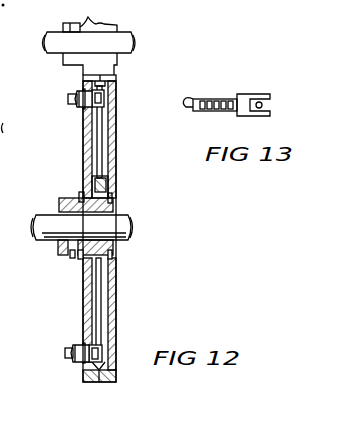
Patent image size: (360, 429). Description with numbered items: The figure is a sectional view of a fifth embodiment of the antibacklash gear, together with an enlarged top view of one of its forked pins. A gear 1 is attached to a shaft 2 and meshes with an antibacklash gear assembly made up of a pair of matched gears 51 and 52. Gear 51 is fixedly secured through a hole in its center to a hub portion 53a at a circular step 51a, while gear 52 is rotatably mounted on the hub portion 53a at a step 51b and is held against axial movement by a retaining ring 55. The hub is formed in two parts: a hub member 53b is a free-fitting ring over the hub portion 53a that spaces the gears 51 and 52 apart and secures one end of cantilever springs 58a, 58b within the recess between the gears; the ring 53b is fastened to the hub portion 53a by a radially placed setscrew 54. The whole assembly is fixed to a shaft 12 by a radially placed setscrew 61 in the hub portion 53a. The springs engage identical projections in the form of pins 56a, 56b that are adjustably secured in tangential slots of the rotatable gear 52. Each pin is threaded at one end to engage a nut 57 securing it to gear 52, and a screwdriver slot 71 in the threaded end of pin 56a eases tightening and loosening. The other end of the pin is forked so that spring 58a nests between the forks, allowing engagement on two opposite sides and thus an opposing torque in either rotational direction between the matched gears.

In FIG. 12, the gear 1 is at (118, 62).
In FIG. 12, the shaft 2 is at (133, 40).
In FIG. 12, the shaft 12 is at (50, 241).
In FIG. 12, the gear 51 is at (117, 128).
In FIG. 12, the circular step 51a is at (113, 198).
In FIG. 12, the step 51b is at (86, 284).
In FIG. 12, the gear 52 is at (83, 152).
In FIG. 12, the hub portion 53a is at (59, 203).
In FIG. 12, the hub member 53b is at (110, 188).
In FIG. 12, the setscrew 54 is at (107, 180).
In FIG. 12, the retaining ring 55 is at (79, 192).
In FIG. 12, the forked pin 56a is at (68, 99).
In FIG. 13, the forked pin 56a is at (214, 99).
In FIG. 12, the pin 56b is at (66, 352).
In FIG. 12, the nut 57 is at (84, 107).
In FIG. 12, the cantilever spring 58a is at (102, 150).
In FIG. 13, the cantilever spring 58a is at (252, 111).
In FIG. 12, the cantilever spring 58b is at (101, 311).
In FIG. 12, the setscrew 61 is at (66, 258).
In FIG. 13, the screwdriver slot 71 is at (186, 95).